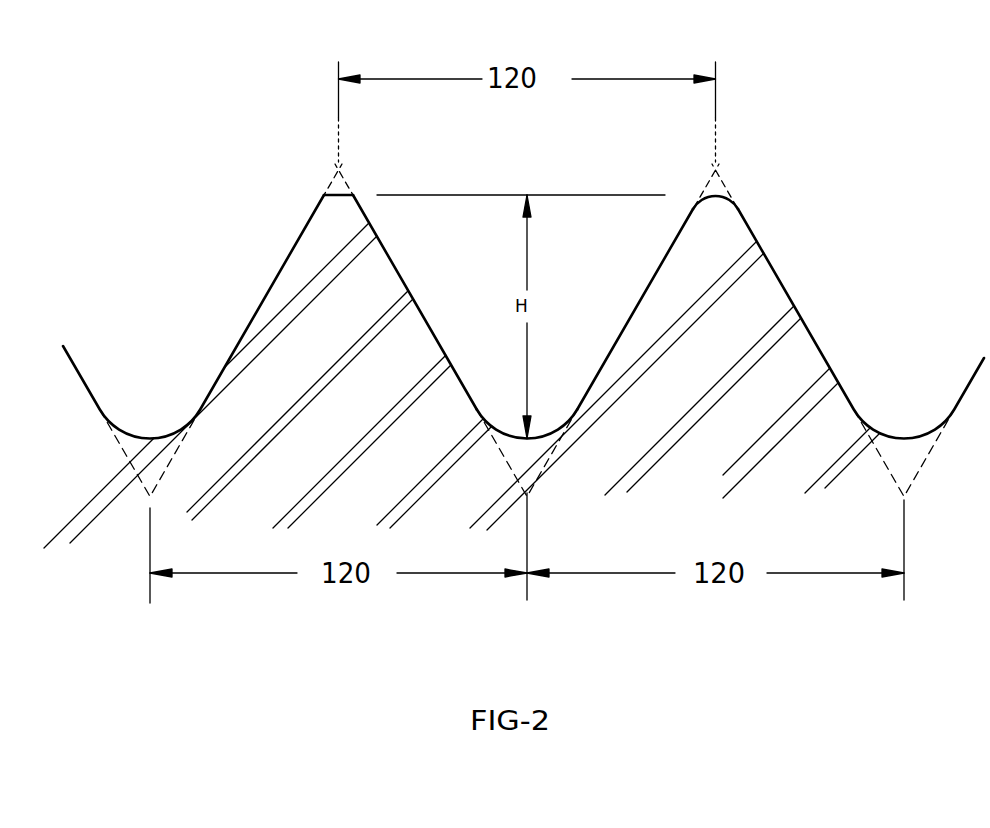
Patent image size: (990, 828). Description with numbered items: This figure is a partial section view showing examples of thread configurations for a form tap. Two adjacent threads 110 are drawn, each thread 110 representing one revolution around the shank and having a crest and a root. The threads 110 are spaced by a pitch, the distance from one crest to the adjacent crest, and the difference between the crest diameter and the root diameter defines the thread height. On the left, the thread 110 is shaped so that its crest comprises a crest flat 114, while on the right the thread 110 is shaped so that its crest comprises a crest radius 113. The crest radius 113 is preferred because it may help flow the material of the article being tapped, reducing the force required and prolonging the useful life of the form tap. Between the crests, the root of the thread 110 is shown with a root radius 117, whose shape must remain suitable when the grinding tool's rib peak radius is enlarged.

The thread 110 is at (306, 268).
The crest radius 113 is at (712, 198).
The crest flat 114 is at (330, 187).
The root radius 117 is at (506, 440).